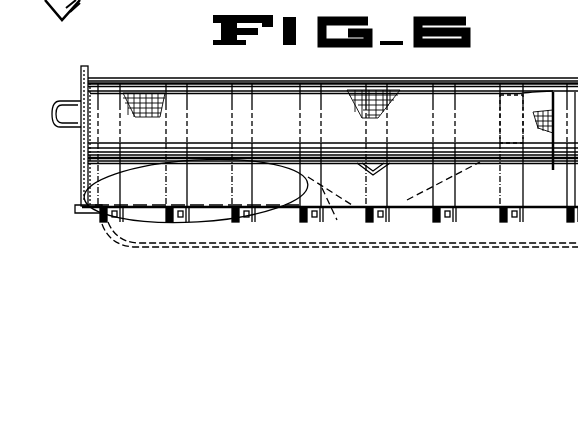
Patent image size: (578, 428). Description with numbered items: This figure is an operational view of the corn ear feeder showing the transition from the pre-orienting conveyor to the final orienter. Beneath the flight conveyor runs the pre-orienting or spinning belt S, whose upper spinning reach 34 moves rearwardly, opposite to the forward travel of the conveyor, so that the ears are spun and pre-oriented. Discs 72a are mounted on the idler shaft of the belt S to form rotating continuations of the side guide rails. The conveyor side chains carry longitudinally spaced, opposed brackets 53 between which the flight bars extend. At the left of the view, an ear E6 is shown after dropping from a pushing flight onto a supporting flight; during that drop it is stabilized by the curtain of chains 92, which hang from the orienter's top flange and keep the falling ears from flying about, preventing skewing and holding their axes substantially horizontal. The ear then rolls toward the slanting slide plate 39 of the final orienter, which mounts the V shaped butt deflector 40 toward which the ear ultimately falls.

The disc 72a is at (87, 72).
The upper spinning reach 34 is at (195, 100).
The pre-orienting or spinning belt S is at (524, 78).
The ear E6 is at (221, 191).
The bracket 53 is at (78, 206).
The chains 92 is at (108, 226).
The V shaped butt deflector 40 is at (394, 200).
The slide plate 39 is at (565, 237).